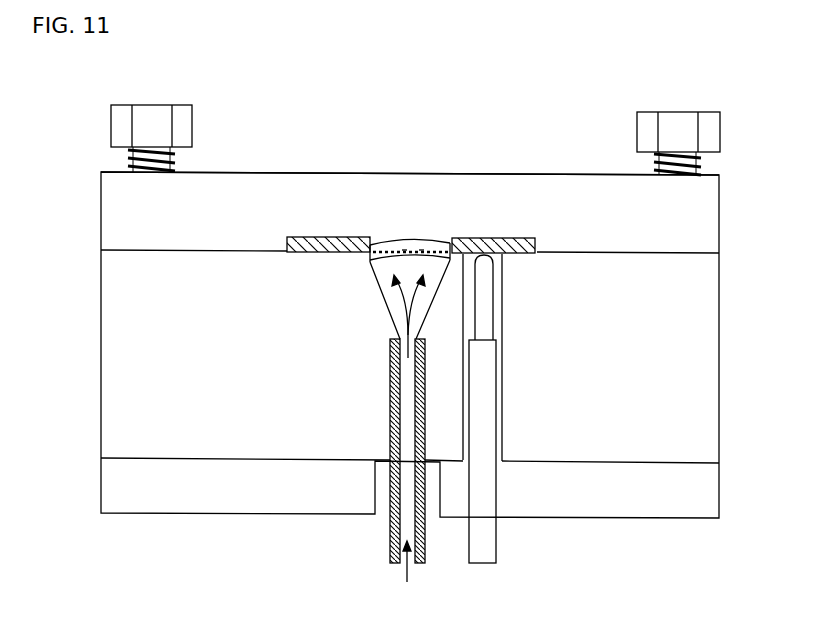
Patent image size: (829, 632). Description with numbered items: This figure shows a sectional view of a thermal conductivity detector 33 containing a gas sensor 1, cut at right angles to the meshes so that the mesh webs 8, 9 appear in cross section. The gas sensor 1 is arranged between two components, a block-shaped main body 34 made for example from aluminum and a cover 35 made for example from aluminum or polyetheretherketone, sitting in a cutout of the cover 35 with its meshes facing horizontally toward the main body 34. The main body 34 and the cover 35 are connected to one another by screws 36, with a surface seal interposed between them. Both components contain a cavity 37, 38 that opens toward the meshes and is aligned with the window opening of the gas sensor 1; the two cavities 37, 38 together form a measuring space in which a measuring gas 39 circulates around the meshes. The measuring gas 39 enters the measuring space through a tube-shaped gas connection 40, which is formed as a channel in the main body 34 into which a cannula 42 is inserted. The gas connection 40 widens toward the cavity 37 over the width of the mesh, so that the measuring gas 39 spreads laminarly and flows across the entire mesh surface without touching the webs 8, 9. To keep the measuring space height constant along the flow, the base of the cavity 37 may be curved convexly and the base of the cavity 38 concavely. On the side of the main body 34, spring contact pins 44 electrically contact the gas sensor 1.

The gas sensor 1 is at (302, 236).
The mesh web 8 is at (407, 250).
The mesh web 9 is at (424, 250).
The thermal conductivity detector 33 is at (448, 143).
The main body 34 is at (100, 360).
The cover 35 is at (344, 172).
The screws 36 is at (193, 127).
The cavity 37 is at (372, 258).
The cavity 38 is at (387, 246).
The measuring gas 39 is at (405, 574).
The gas connection 40 is at (388, 303).
The cannula 42 is at (390, 545).
The spring contact pins 44 is at (496, 545).